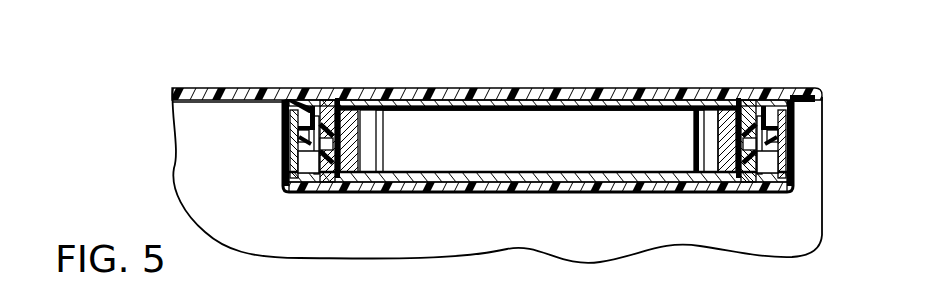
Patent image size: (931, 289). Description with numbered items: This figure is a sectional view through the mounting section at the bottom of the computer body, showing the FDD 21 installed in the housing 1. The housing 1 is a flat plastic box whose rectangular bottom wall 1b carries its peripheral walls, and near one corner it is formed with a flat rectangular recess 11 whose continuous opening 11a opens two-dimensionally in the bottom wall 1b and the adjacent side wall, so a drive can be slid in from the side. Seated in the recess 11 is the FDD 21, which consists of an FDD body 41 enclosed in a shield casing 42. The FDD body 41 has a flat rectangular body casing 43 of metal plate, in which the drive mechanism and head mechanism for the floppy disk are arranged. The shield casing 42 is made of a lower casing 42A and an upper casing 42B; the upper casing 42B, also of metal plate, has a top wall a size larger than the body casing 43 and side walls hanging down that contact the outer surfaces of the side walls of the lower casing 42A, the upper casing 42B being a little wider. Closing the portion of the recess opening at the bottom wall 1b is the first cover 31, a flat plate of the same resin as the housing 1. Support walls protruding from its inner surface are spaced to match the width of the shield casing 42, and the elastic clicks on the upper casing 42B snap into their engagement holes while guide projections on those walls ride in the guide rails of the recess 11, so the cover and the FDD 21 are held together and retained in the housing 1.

The housing 1 is at (222, 150).
The bottom wall 1b is at (225, 89).
The recess 11 is at (429, 180).
The opening 11a is at (293, 109).
The FDD 21 is at (578, 160).
The first cover 31 is at (557, 80).
The FDD body 41 is at (634, 132).
The shield casing 42 is at (492, 33).
The lower casing 42A is at (467, 140).
The upper casing 42B is at (415, 106).
The body casing 43 is at (595, 133).